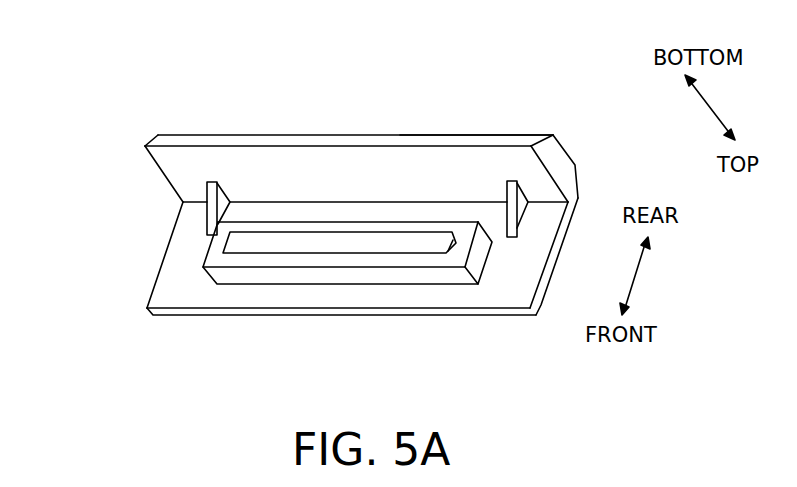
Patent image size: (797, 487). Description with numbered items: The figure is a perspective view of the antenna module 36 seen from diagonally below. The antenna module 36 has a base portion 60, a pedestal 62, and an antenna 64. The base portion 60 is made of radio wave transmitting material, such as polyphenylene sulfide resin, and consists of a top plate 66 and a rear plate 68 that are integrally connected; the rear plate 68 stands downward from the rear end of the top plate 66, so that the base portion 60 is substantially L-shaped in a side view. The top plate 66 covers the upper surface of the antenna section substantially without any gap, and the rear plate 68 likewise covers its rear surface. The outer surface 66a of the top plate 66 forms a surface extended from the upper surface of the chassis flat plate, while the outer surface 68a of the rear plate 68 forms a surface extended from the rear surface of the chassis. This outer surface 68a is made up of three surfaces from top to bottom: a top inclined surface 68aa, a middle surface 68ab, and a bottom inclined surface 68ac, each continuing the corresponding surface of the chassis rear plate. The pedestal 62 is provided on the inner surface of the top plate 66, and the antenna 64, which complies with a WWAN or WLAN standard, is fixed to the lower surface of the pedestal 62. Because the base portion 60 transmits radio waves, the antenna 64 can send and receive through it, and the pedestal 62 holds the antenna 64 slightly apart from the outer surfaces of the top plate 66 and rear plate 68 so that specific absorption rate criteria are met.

The antenna module 36 is at (318, 112).
The base portion 60 is at (83, 175).
The rear plate 68 is at (190, 192).
The top plate 66 is at (190, 220).
The outer surface of the rear plate 68a is at (637, 43).
The top inclined surface 68aa is at (580, 182).
The middle surface 68ab is at (563, 136).
The bottom inclined surface 68ac is at (449, 136).
The outer surface of the top plate 66a is at (556, 272).
The pedestal 62 is at (352, 277).
The antenna 64 is at (277, 238).